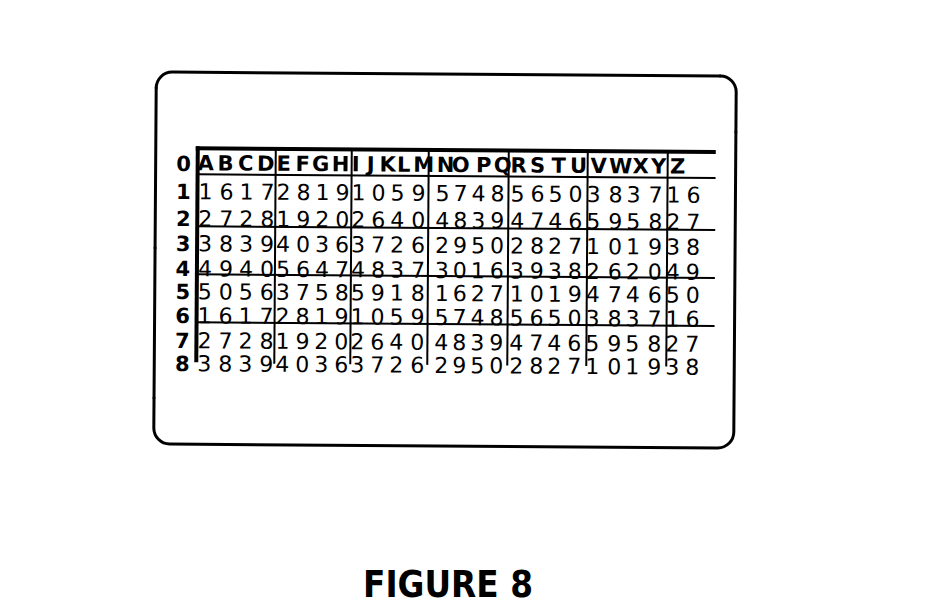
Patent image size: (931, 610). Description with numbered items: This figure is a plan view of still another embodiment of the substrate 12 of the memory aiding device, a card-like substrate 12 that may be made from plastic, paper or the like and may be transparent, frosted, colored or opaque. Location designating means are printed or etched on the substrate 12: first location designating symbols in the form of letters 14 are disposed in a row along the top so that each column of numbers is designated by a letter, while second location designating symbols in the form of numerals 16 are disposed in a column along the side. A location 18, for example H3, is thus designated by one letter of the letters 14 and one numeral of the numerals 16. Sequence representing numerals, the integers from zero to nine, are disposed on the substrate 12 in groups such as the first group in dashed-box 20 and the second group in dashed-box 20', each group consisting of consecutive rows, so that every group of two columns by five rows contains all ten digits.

The substrate 12 is at (737, 243).
The letters 14 is at (716, 74).
The numerals 16 is at (154, 213).
The location 18 is at (228, 72).
The dashed-box 20 is at (108, 288).
The dashed-box 20' is at (106, 387).